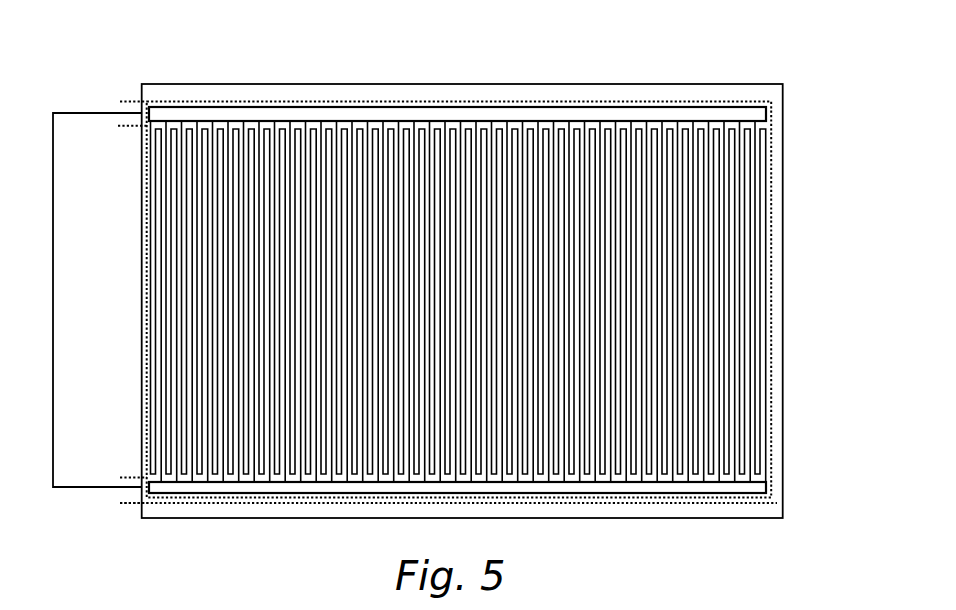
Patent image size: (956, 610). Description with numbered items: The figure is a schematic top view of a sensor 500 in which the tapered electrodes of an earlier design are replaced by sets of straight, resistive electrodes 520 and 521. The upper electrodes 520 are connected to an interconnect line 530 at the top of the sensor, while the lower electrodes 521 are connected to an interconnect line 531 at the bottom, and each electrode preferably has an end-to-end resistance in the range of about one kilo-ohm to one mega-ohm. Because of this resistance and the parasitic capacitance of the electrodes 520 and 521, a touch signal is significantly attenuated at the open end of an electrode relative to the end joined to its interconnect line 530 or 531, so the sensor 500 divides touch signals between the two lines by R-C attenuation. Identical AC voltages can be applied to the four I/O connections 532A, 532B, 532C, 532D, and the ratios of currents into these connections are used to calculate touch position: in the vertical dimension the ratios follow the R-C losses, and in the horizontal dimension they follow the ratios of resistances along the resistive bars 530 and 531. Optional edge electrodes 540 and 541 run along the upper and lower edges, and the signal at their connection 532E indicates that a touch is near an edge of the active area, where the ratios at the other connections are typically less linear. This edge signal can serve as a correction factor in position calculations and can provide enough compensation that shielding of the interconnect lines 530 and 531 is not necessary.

The sensor 500 is at (708, 72).
The resistive electrodes 520 is at (715, 182).
The resistive electrodes 521 is at (722, 260).
The interconnect line 530 is at (517, 101).
The interconnect line 531 is at (578, 504).
The I/O connection 532A is at (120, 102).
The I/O connection 532B is at (118, 126).
The I/O connection 532C is at (120, 478).
The I/O connection 532D is at (120, 503).
The connection 532E is at (97, 300).
The edge electrode 540 is at (352, 114).
The edge electrode 541 is at (297, 491).